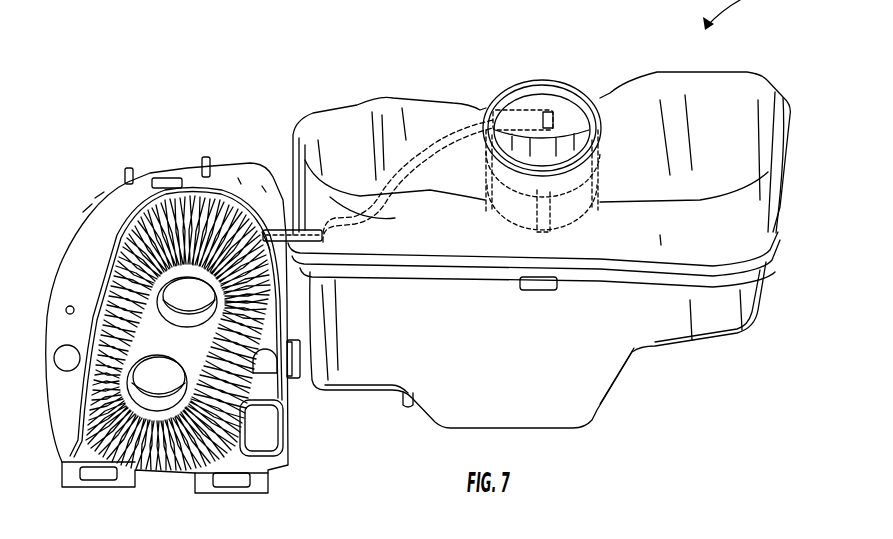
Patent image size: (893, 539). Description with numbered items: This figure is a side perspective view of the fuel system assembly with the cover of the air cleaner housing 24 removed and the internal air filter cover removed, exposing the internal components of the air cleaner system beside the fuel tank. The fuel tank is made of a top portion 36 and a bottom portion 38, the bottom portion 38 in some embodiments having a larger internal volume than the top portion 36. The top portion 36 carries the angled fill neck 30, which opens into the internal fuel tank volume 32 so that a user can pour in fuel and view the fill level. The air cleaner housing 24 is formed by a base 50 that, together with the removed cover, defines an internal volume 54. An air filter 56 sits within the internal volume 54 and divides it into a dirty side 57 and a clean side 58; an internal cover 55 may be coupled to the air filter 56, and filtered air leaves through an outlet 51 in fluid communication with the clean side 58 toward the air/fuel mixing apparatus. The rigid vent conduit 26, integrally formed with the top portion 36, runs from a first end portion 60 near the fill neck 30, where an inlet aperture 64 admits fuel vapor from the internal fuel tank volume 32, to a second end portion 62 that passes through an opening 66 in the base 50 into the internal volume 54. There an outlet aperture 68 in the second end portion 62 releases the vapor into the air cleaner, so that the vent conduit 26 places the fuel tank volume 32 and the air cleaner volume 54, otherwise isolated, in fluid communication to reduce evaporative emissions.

The air cleaner housing 24 is at (172, 146).
The vent conduit 26 is at (437, 138).
The fill neck 30 is at (530, 92).
The internal fuel tank volume 32 is at (582, 113).
The top portion 36 is at (752, 82).
The bottom portion 38 is at (680, 327).
The base 50 is at (113, 181).
The outlet 51 is at (150, 378).
The internal volume 54 is at (47, 332).
The internal cover 55 is at (174, 106).
The air filter 56 is at (160, 467).
The dirty side 57 is at (88, 267).
The clean side 58 is at (183, 352).
The first end portion 60 is at (520, 122).
The second end portion 62 is at (278, 228).
The inlet aperture 64 is at (555, 110).
The opening 66 is at (312, 260).
The outlet aperture 68 is at (260, 233).